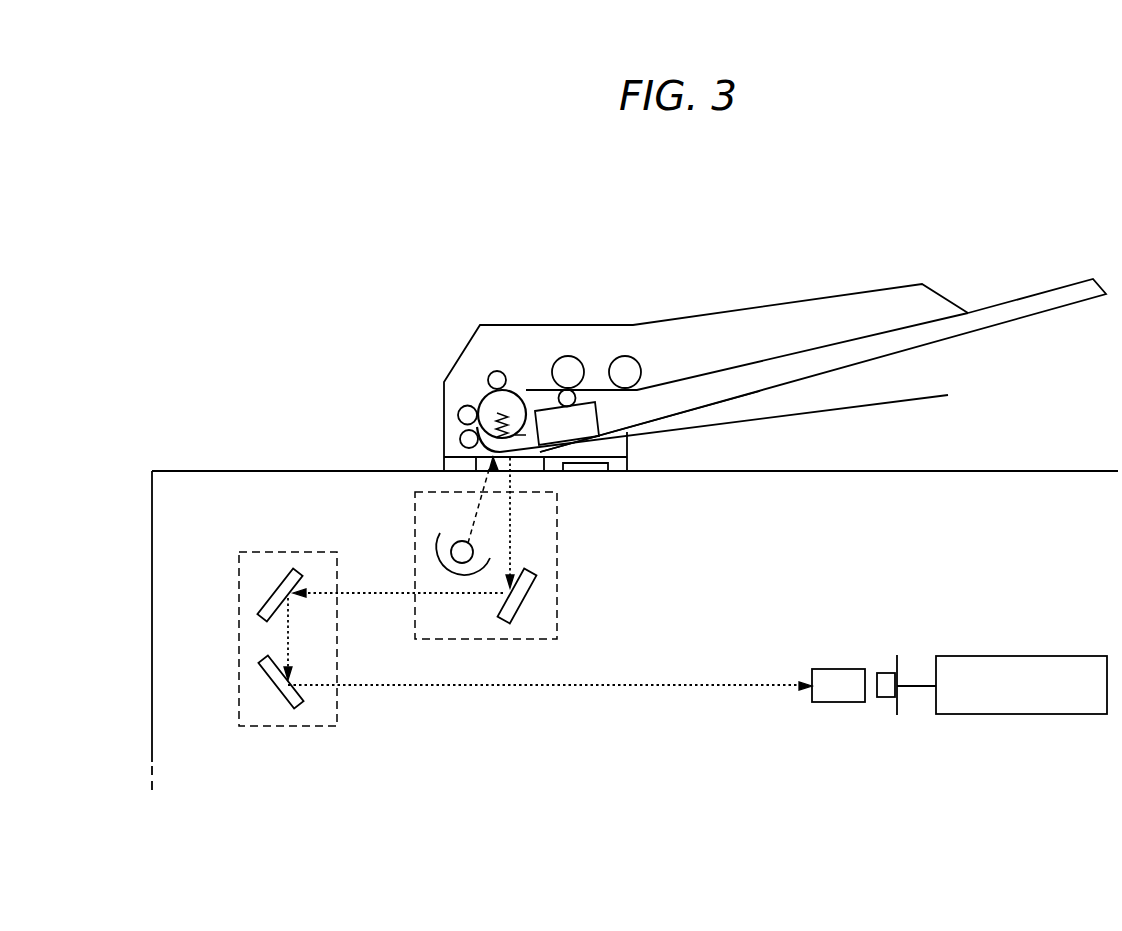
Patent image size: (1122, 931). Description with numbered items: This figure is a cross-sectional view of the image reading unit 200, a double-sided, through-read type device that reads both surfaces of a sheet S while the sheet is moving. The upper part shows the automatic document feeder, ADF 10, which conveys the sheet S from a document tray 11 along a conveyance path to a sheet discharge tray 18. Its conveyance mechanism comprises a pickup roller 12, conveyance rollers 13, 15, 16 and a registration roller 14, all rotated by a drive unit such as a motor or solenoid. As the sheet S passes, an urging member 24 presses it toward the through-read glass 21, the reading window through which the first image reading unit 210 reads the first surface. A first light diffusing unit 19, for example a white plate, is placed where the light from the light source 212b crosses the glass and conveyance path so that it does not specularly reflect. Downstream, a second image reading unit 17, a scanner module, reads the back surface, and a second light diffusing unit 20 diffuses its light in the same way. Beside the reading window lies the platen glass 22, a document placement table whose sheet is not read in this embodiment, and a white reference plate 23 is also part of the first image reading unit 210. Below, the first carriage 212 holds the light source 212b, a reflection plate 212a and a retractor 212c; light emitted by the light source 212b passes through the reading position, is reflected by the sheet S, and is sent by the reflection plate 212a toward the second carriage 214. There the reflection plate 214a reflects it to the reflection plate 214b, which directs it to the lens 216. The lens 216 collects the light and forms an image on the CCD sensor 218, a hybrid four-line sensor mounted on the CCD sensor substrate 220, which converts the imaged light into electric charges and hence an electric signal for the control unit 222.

The image reading unit 200 is at (915, 146).
The automatic document feeder (ADF) 10 is at (568, 221).
The document tray 11 is at (830, 343).
The sheet S is at (687, 378).
The pickup roller 12 is at (625, 356).
The conveyance roller 13 is at (568, 356).
The registration roller 14 is at (498, 371).
The conveyance roller 15 is at (458, 415).
The conveyance roller 16 is at (460, 440).
The second image reading unit 17 is at (599, 412).
The sheet discharge tray 18 is at (898, 404).
The first light diffusing unit 19 is at (523, 434).
The second light diffusing unit 20 is at (592, 448).
The through-read glass 21 is at (525, 472).
The platen glass 22 is at (1063, 471).
The white reference plate 23 is at (594, 472).
The urging member 24 is at (500, 415).
The first image reading unit 210 is at (193, 455).
The first carriage 212 is at (557, 588).
The reflection plate 212a is at (513, 620).
The light source 212b is at (455, 541).
The retractor 212c is at (437, 565).
The second carriage 214 is at (285, 551).
The reflection plate 214a is at (276, 588).
The reflection plate 214b is at (276, 692).
The lens 216 is at (828, 668).
The CCD sensor 218 is at (885, 672).
The CCD sensor substrate 220 is at (893, 706).
The control unit 222 is at (1018, 656).